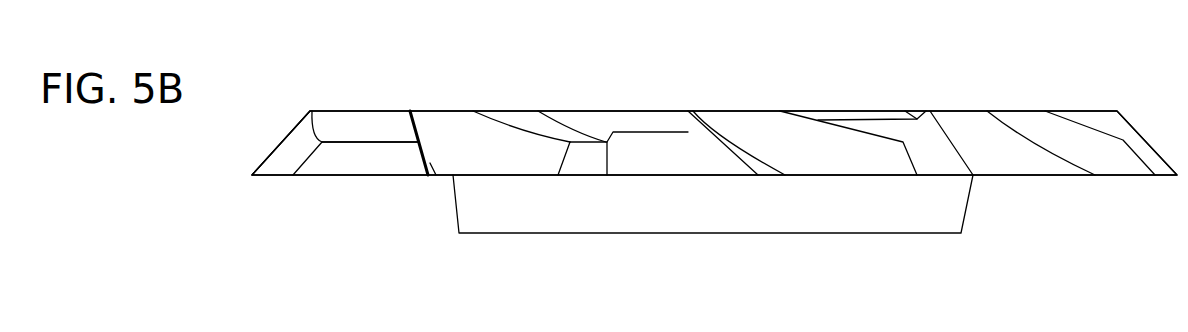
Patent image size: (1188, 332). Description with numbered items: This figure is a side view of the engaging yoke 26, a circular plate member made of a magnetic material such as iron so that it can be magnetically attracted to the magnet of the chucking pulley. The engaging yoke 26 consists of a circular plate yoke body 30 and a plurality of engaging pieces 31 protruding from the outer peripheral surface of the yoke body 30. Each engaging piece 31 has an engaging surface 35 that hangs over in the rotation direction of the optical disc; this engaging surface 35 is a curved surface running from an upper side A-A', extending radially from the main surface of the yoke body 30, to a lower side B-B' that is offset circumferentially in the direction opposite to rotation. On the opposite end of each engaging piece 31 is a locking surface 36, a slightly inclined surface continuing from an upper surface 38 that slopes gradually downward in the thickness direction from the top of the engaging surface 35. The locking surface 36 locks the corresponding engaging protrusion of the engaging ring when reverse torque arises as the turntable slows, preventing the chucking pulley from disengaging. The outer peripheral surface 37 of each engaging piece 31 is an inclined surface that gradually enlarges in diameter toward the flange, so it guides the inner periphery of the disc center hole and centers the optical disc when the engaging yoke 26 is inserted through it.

The engaging yoke 26 is at (179, 145).
The yoke body 30 is at (638, 158).
The engaging piece 31 is at (453, 167).
The engaging surface 35 is at (740, 150).
The locking surface 36 is at (362, 157).
The outer peripheral surface 37 is at (285, 157).
The upper surface 38 is at (356, 130).